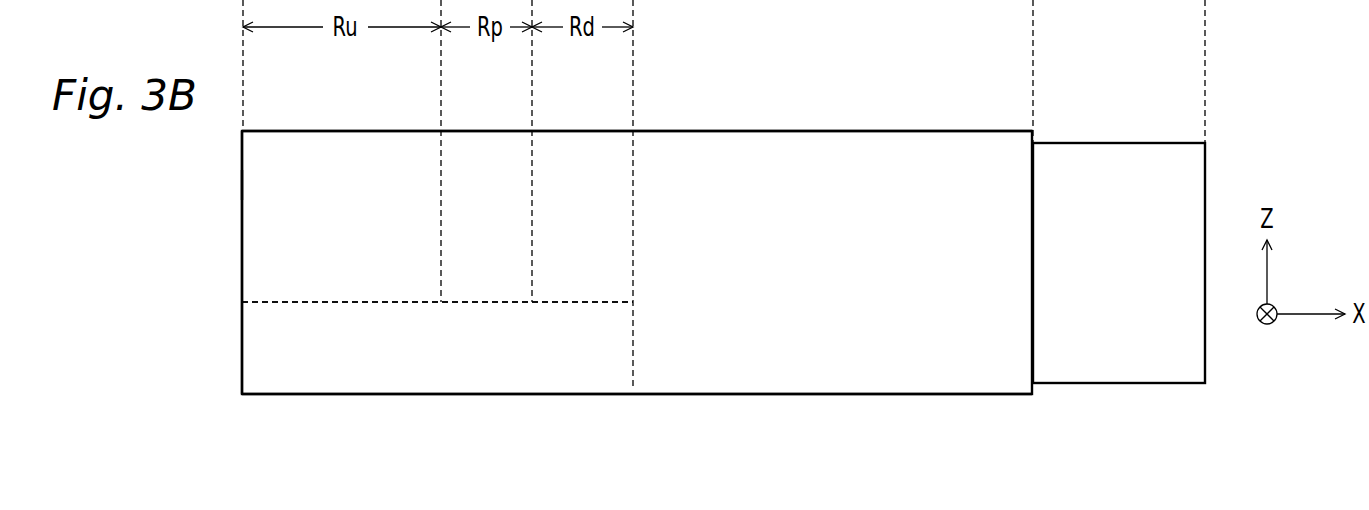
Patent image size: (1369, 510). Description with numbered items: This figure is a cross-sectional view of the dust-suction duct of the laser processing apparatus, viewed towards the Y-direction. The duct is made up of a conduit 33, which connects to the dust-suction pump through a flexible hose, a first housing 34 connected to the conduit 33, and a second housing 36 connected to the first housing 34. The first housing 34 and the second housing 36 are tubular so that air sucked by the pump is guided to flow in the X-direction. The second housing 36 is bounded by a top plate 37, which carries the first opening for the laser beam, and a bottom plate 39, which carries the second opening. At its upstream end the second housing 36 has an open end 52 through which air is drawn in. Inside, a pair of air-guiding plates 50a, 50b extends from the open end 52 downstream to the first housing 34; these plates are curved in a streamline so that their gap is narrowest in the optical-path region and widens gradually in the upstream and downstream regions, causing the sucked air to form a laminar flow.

The conduit 33 is at (1119, 228).
The first housing 34 is at (637, 227).
The second housing 36 is at (280, 226).
The top plate 37 is at (637, 95).
The bottom plate 39 is at (637, 432).
The open end 52 is at (200, 183).
The air-guiding plate 50a is at (437, 381).
The air-guiding plate 50b is at (488, 427).